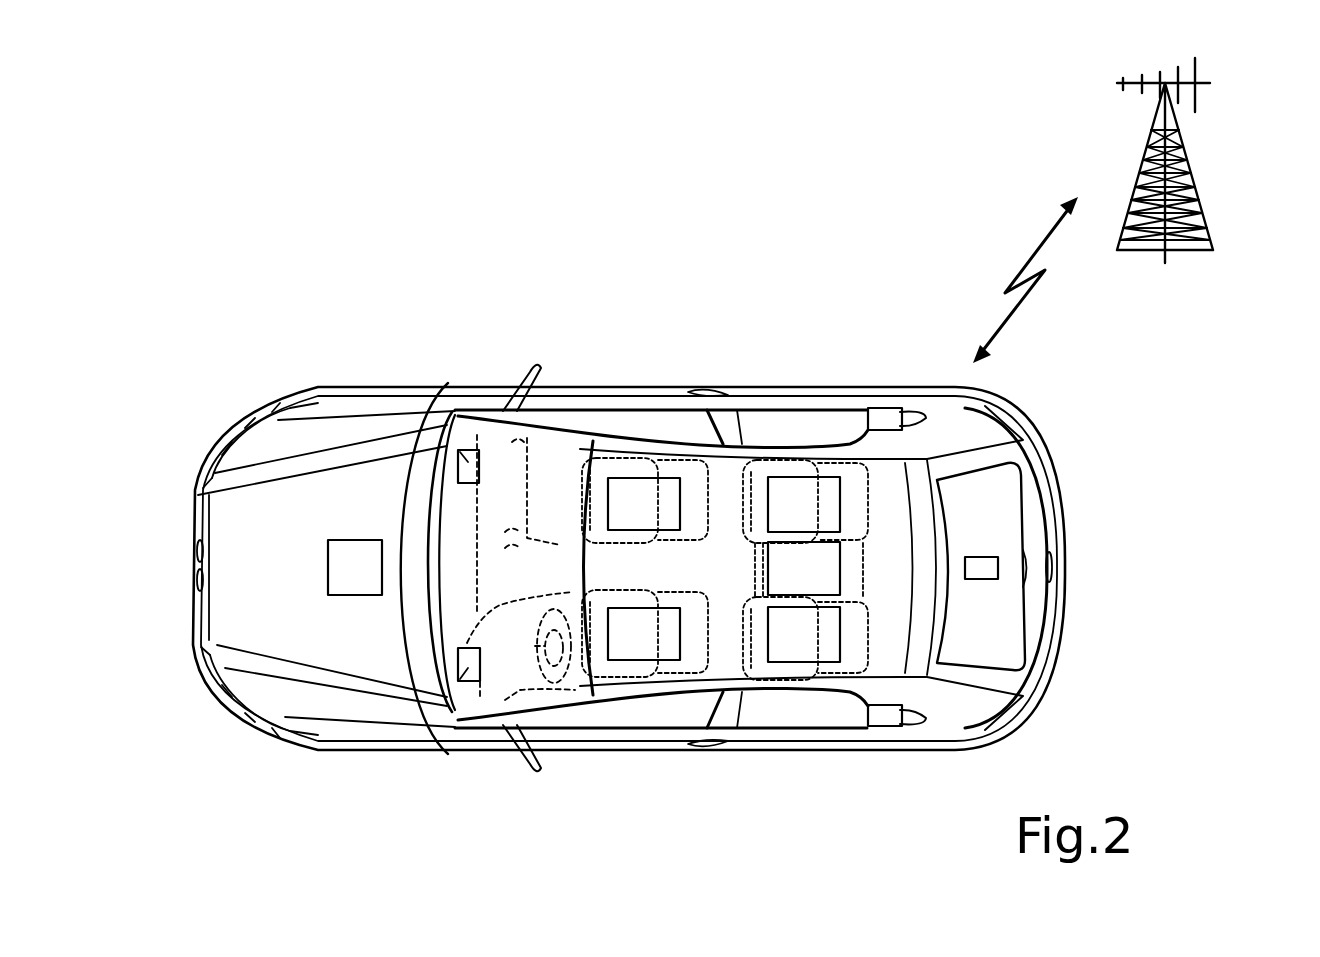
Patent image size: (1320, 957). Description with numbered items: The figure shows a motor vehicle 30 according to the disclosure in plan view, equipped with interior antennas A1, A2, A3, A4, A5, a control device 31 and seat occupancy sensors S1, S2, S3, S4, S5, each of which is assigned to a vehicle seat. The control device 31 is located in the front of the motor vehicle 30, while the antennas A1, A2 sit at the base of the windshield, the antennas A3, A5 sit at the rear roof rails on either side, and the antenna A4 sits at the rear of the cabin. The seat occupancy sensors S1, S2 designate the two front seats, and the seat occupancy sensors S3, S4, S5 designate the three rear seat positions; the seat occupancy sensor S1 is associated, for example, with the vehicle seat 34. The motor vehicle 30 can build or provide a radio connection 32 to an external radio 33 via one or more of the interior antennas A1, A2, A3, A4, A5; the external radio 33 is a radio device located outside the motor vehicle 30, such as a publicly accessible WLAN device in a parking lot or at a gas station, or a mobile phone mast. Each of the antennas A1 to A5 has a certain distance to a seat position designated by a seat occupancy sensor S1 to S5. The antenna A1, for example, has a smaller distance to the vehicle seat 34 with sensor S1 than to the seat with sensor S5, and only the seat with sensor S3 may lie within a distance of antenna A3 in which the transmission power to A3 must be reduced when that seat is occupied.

The motor vehicle 30 is at (350, 427).
The control device 31 is at (338, 566).
The radio connection 32 is at (1027, 300).
The external radio 33 is at (1190, 185).
The vehicle seat 34 is at (685, 656).
The interior antenna A1 is at (452, 723).
The interior antenna A2 is at (450, 422).
The interior antenna A3 is at (885, 715).
The interior antenna A4 is at (998, 567).
The interior antenna A5 is at (885, 418).
The seat occupancy sensor S1 is at (647, 649).
The seat occupancy sensor S2 is at (647, 518).
The seat occupancy sensor S3 is at (806, 645).
The seat occupancy sensor S4 is at (806, 580).
The seat occupancy sensor S5 is at (806, 518).